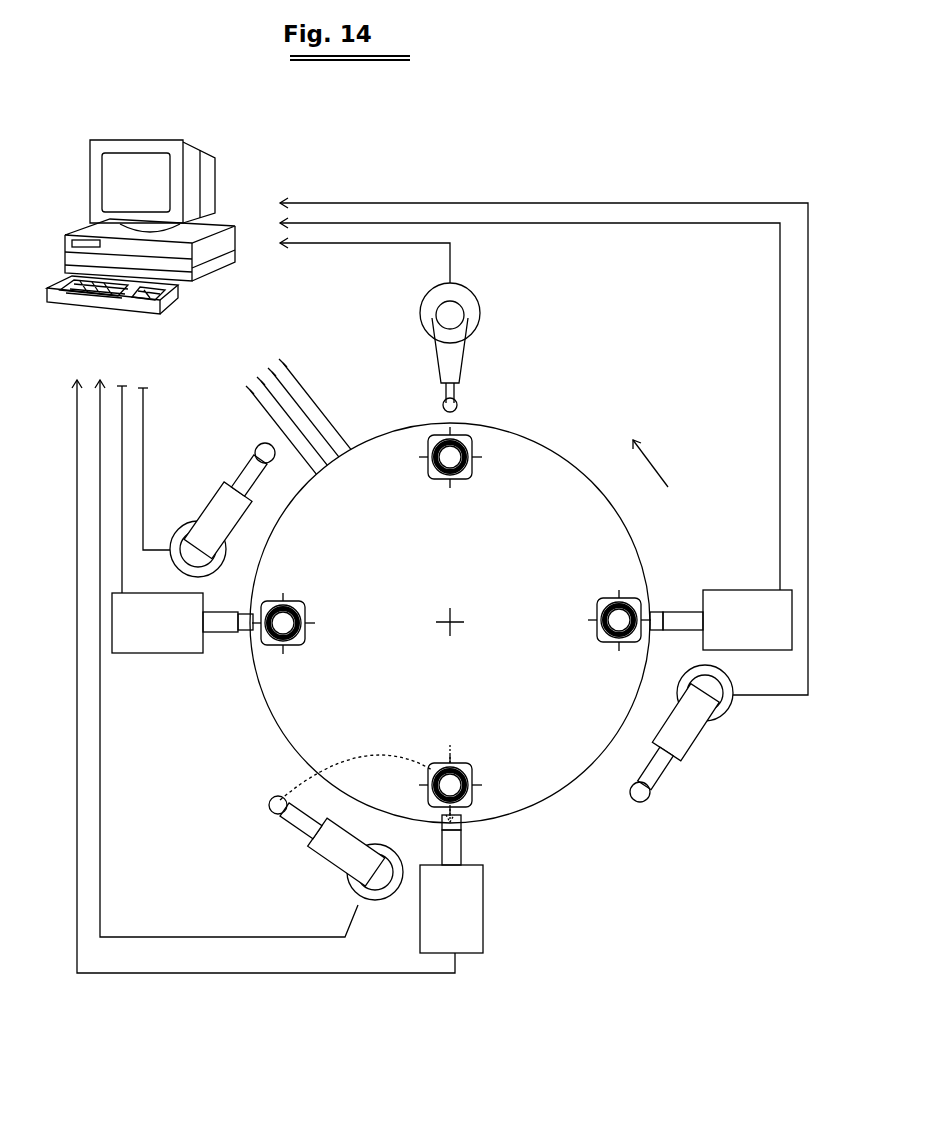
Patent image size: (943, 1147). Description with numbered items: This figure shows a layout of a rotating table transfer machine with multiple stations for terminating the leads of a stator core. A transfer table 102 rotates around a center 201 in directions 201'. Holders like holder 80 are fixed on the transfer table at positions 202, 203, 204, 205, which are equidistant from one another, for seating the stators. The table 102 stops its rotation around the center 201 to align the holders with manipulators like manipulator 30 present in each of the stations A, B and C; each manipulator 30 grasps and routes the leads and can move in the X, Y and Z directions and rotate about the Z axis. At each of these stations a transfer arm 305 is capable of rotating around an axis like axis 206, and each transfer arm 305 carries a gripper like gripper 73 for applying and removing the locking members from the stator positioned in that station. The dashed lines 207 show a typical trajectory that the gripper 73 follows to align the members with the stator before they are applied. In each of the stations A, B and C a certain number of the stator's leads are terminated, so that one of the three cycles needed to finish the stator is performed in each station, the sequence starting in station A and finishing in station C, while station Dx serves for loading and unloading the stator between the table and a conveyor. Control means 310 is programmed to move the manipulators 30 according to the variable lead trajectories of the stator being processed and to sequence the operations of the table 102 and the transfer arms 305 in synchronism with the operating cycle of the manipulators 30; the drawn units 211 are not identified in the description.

The control means 310 is at (135, 130).
The transfer table 102 is at (522, 452).
The center 201 is at (482, 639).
The directions of rotation 201' is at (680, 451).
The station Dx is at (468, 347).
The position 205 is at (480, 485).
The position 202 is at (292, 585).
The position 204 is at (590, 650).
The position 203 is at (482, 775).
The holder 80 is at (440, 478).
The manipulator 30 is at (218, 630).
The processing unit 211 is at (148, 641).
The axis 206 is at (195, 545).
The transfer arm 305 is at (222, 497).
The gripper 73 is at (270, 810).
The dashed lines 207 is at (327, 763).